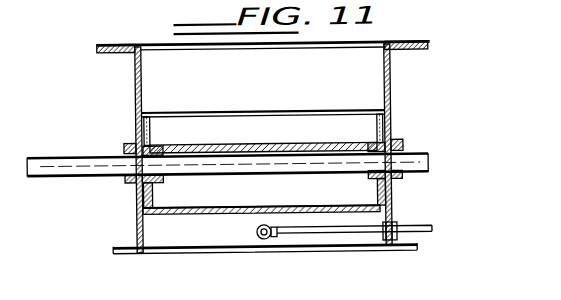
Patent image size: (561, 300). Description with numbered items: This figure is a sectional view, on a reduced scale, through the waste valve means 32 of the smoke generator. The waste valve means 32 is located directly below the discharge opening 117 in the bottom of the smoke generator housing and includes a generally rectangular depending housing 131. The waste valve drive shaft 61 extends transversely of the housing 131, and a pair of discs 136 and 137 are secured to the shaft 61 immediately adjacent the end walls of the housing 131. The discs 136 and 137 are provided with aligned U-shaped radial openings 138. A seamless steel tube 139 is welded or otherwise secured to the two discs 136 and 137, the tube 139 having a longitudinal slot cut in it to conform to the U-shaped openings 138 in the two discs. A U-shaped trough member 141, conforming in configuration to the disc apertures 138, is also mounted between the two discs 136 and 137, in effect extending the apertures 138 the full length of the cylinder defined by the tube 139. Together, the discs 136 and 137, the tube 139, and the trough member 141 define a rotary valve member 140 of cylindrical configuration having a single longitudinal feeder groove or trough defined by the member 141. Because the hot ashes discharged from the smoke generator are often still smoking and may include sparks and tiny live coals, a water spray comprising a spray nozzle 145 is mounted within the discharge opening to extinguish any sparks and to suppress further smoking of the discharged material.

The waste valve means 32 is at (114, 107).
The waste valve drive shaft 61 is at (418, 155).
The discharge opening 117 is at (359, 44).
The depending housing 131 is at (391, 80).
The disc 136 is at (151, 196).
The disc 137 is at (376, 196).
The U-shaped radial opening 138 is at (147, 138).
The seamless steel tube 139 is at (231, 215).
The rotary valve member 140 is at (223, 107).
The U-shaped trough member 141 is at (265, 147).
The spray nozzle 145 is at (262, 239).